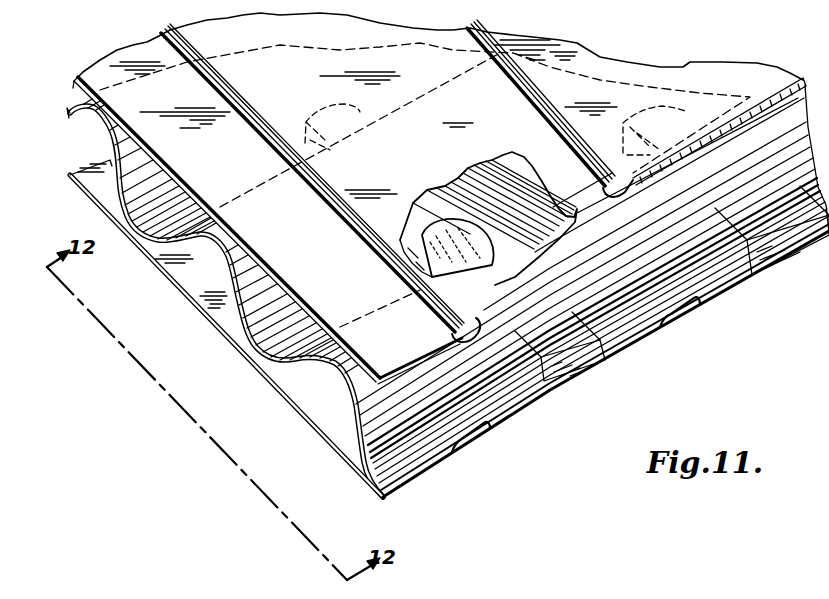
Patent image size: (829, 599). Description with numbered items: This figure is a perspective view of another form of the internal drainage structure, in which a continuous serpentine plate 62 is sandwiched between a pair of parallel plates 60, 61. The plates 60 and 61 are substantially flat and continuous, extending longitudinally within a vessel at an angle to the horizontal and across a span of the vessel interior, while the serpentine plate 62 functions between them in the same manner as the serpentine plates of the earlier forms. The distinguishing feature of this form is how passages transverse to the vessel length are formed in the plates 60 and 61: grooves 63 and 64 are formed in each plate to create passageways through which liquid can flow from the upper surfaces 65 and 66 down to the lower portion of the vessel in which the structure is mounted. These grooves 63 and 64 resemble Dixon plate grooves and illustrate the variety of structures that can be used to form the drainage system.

The plate 60 is at (78, 88).
The plate 61 is at (183, 293).
The serpentine plate 62 is at (367, 457).
The groove 63 is at (161, 42).
The groove 64 is at (473, 437).
The upper surface 65 is at (435, 170).
The upper surface 66 is at (321, 400).